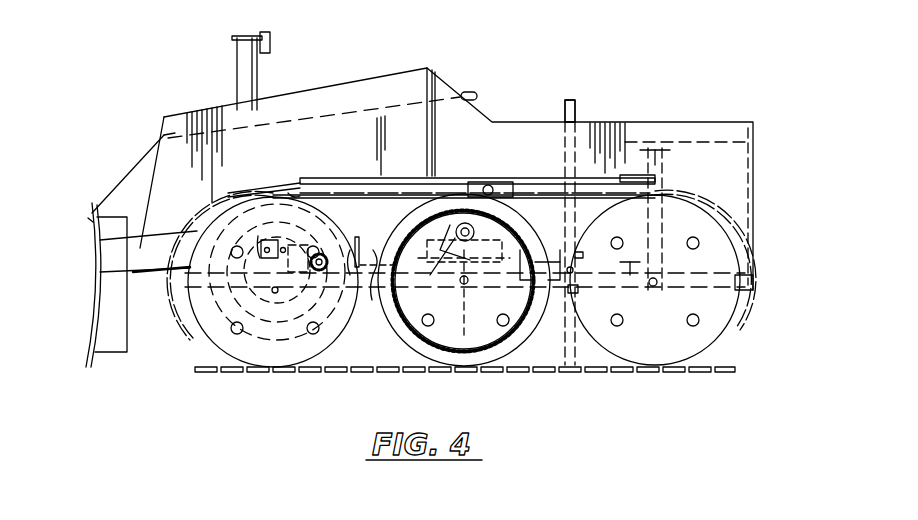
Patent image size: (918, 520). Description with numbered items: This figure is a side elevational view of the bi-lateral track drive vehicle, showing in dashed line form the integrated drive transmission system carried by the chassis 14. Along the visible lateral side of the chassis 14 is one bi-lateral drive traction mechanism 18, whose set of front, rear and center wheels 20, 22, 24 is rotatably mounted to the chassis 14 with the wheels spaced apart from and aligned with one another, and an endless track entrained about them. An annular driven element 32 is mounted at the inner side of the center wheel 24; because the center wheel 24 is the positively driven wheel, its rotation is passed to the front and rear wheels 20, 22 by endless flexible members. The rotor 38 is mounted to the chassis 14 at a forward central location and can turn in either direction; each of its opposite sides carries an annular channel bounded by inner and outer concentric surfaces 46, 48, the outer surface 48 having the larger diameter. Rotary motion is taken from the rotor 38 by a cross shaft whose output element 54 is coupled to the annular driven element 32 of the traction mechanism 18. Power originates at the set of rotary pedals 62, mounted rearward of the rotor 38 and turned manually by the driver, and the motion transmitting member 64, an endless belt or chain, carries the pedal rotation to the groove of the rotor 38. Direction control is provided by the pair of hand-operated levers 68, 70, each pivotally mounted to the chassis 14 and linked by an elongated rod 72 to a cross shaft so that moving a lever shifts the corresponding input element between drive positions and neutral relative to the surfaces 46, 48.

The chassis 14 is at (507, 110).
The bi-lateral drive traction mechanism 18 is at (727, 350).
The front wheel 20 is at (252, 348).
The rear wheel 22 is at (658, 340).
The center wheel 24 is at (490, 355).
The annular driven element 32 is at (435, 344).
The rotor 38 is at (227, 187).
The inner concentric surface 46 is at (273, 218).
The outer concentric surface 48 is at (293, 192).
The output element 54 is at (318, 272).
The set of rotary pedals 62 is at (470, 223).
The motion transmitting member 64 is at (372, 302).
The hand-operated lever 68 is at (577, 104).
The hand-operated lever 70 is at (570, 111).
The elongated rod 72 is at (373, 262).